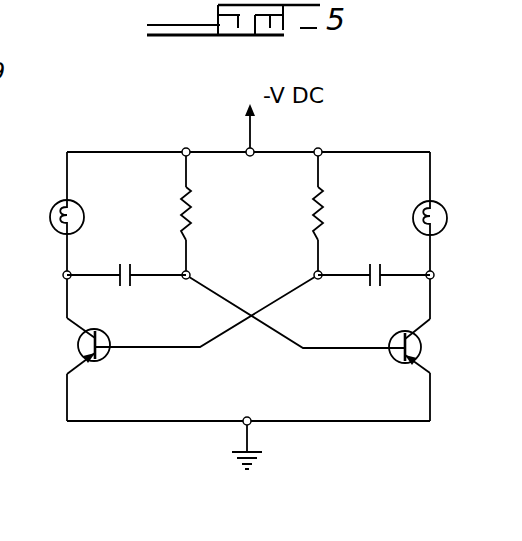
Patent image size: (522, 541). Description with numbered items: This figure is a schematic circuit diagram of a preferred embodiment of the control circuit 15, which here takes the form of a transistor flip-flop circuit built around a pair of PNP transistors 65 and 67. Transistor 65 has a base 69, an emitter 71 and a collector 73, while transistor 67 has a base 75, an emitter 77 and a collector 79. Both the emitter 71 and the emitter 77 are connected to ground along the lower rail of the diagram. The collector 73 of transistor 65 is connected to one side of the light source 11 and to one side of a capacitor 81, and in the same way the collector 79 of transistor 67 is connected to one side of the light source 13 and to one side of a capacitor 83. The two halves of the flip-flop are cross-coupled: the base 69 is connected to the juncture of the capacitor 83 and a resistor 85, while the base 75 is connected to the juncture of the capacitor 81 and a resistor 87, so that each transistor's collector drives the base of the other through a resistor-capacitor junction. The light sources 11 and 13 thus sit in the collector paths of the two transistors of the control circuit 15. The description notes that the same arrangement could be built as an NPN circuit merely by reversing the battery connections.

The light source 11 is at (443, 210).
The light source 13 is at (52, 210).
The control circuit 15 is at (156, 434).
The transistor 65 is at (397, 334).
The transistor 67 is at (106, 330).
The base 69 is at (393, 357).
The emitter 71 is at (411, 362).
The collector 73 is at (418, 344).
The base 75 is at (104, 352).
The emitter 77 is at (86, 361).
The collector 79 is at (78, 341).
The capacitor 81 is at (381, 281).
The capacitor 83 is at (132, 280).
The resistor 85 is at (192, 214).
The resistor 87 is at (324, 212).